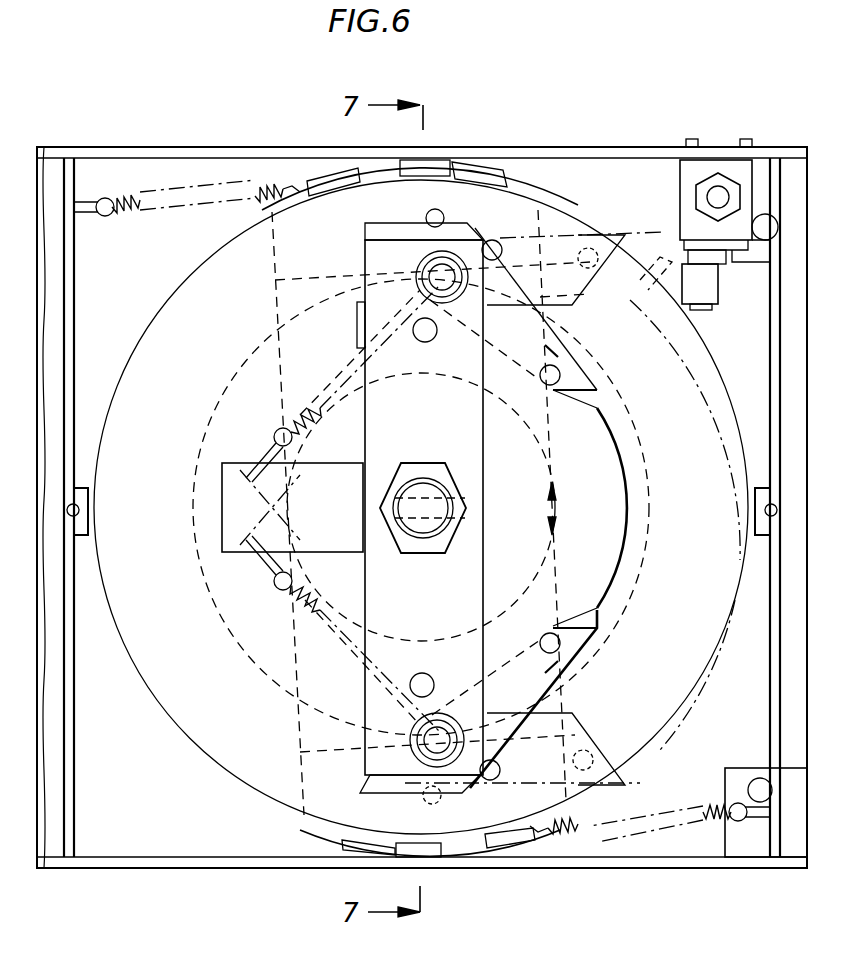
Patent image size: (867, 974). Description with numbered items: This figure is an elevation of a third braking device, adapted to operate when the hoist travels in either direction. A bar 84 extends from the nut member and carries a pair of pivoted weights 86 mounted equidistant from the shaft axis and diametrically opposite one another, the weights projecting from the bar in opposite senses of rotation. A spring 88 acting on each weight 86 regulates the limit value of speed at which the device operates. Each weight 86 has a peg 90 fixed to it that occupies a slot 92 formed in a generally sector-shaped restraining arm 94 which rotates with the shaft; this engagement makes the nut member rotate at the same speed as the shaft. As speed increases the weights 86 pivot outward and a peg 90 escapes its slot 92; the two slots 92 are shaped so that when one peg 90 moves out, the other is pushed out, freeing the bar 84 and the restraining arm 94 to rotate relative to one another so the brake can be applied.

The bar 84 is at (390, 600).
The pivoted weight 86 is at (520, 695).
The spring 88 is at (292, 428).
The peg 90 is at (553, 372).
The slot 92 is at (590, 403).
The restraining arm 94 is at (612, 500).